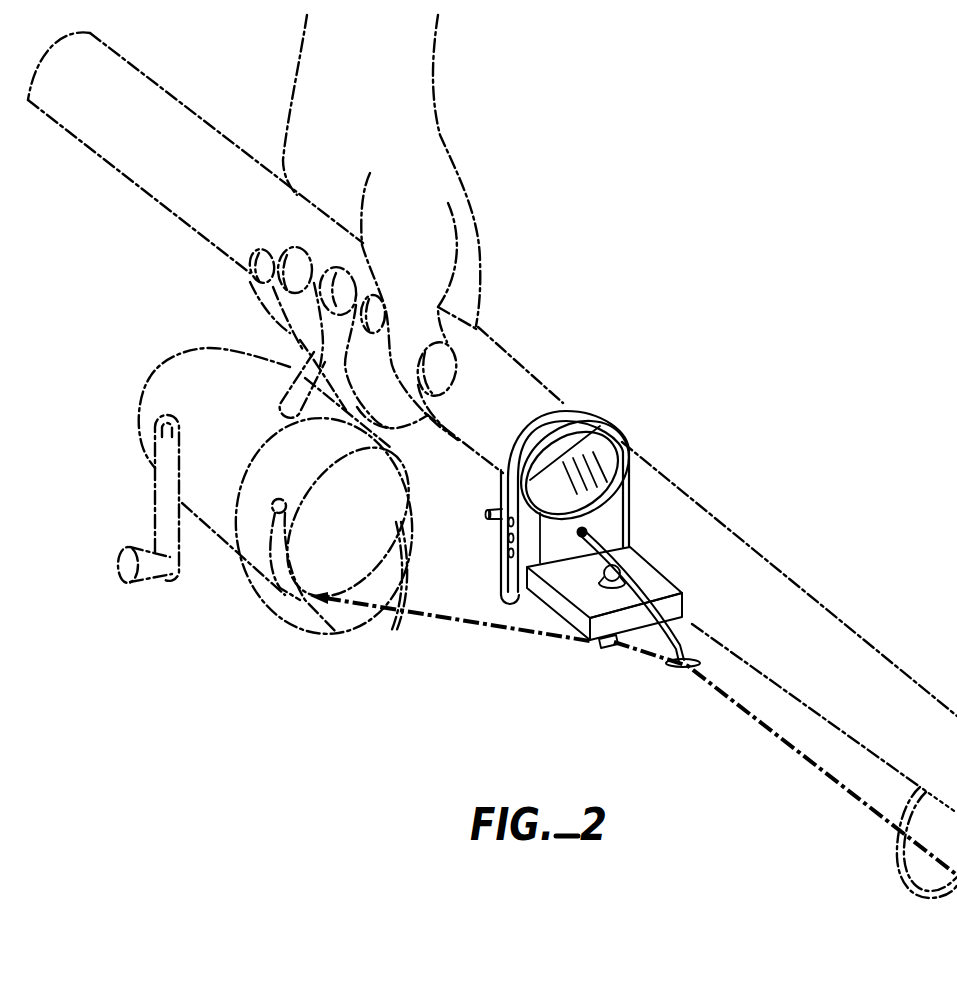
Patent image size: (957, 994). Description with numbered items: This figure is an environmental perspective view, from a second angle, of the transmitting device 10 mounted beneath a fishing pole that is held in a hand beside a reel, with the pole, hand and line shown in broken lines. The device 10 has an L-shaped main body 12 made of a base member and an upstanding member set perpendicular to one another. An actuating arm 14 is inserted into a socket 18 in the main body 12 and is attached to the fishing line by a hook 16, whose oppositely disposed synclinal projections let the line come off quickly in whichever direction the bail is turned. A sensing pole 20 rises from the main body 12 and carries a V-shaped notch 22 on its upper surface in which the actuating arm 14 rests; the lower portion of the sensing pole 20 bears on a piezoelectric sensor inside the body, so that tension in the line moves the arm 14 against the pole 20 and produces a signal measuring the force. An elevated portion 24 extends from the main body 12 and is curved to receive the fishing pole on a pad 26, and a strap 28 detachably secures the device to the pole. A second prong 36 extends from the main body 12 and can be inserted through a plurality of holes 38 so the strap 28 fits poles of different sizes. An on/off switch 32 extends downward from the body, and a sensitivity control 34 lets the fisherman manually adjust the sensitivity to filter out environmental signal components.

The transmitting device 10 is at (676, 567).
The L-shaped main body 12 is at (540, 587).
The actuating arm 14 is at (690, 618).
The hook 16 is at (675, 669).
The socket 18 is at (590, 531).
The sensing pole 20 is at (572, 612).
The V-shaped notch 22 is at (600, 552).
The elevated portion 24 is at (633, 485).
The pad 26 is at (604, 430).
The strap 28 is at (563, 415).
The on/off switch 32 is at (610, 646).
The sensitivity control 34 is at (487, 514).
The second prong 36 is at (507, 556).
The holes 38 is at (507, 542).